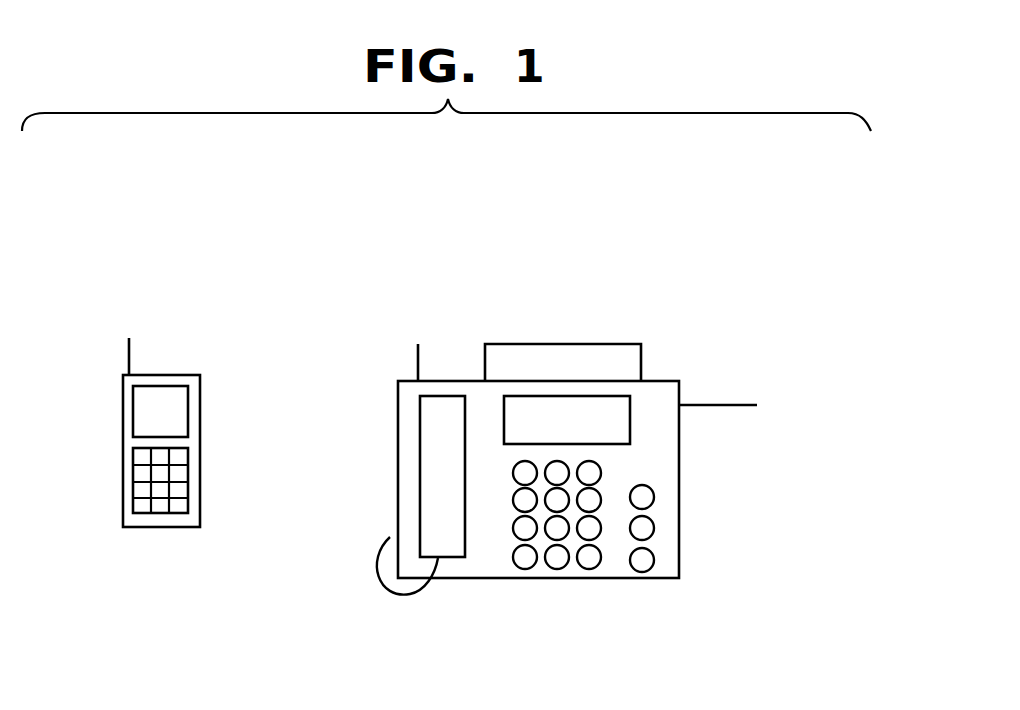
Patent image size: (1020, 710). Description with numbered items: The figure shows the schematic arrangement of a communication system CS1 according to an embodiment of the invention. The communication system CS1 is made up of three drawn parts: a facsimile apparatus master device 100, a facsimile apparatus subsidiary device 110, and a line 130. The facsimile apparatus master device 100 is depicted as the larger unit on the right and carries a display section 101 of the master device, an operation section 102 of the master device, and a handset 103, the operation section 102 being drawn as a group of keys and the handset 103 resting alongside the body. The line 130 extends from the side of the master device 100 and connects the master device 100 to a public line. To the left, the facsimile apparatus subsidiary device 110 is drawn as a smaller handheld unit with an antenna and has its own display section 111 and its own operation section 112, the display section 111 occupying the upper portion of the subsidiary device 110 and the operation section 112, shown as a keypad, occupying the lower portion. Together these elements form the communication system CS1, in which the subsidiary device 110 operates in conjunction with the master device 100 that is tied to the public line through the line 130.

The communication system CS1 is at (160, 214).
The facsimile apparatus master device 100 is at (447, 381).
The display section 101 is at (553, 396).
The operation section 102 is at (607, 517).
The handset 103 is at (453, 557).
The facsimile apparatus subsidiary device 110 is at (160, 375).
The display section 111 is at (133, 422).
The operation section 112 is at (133, 503).
The line 130 is at (734, 405).